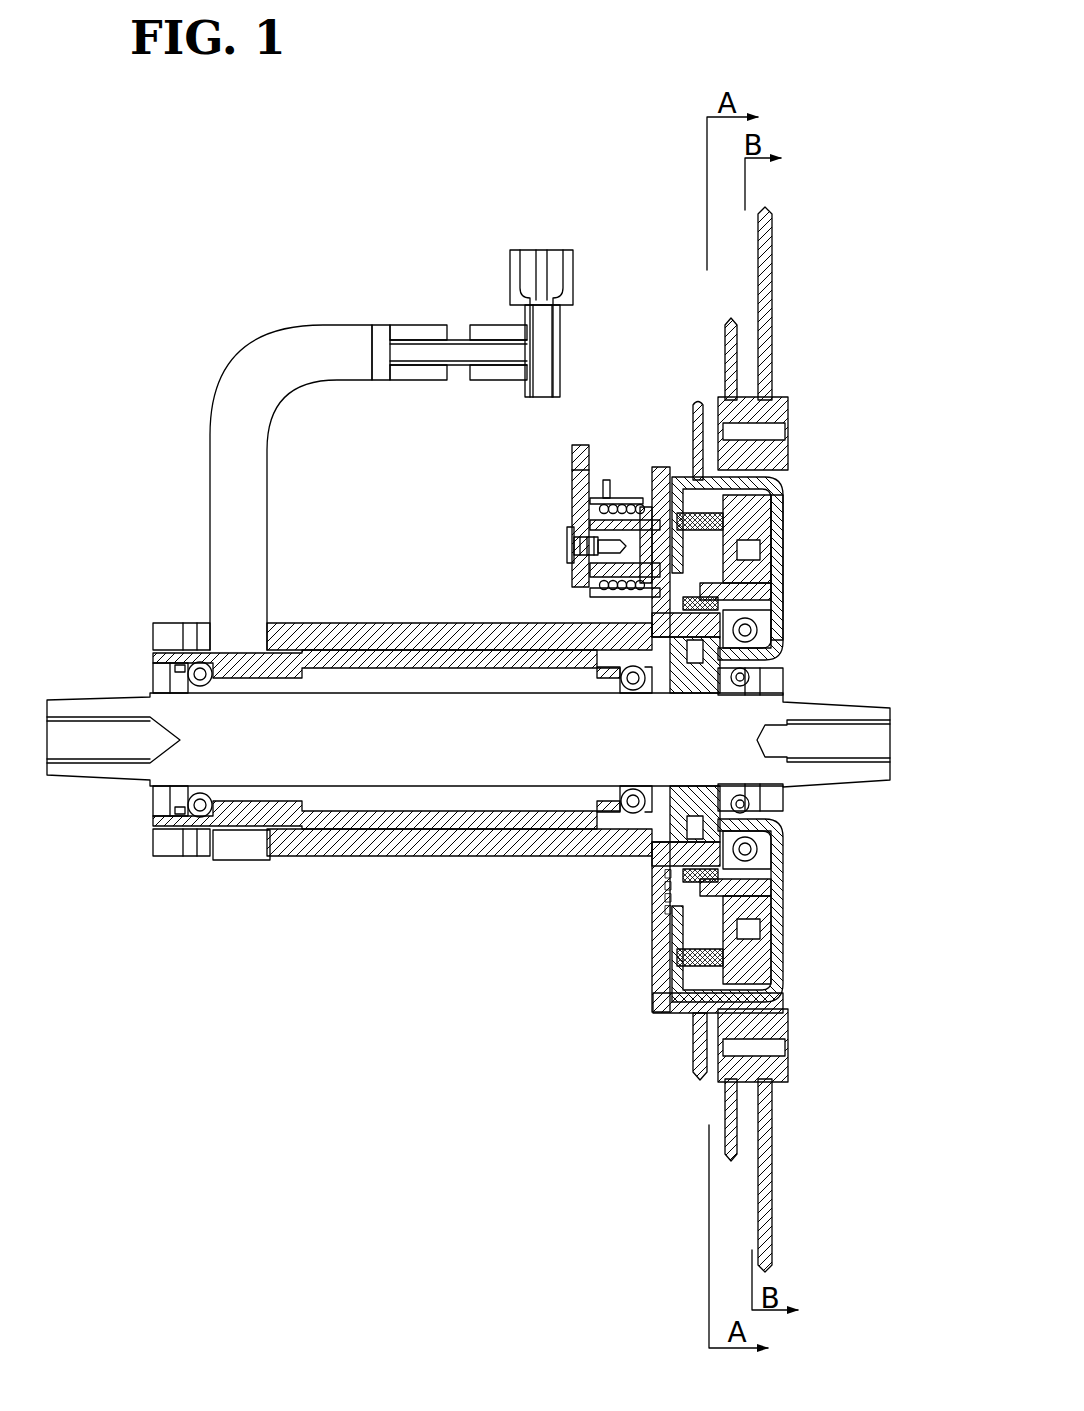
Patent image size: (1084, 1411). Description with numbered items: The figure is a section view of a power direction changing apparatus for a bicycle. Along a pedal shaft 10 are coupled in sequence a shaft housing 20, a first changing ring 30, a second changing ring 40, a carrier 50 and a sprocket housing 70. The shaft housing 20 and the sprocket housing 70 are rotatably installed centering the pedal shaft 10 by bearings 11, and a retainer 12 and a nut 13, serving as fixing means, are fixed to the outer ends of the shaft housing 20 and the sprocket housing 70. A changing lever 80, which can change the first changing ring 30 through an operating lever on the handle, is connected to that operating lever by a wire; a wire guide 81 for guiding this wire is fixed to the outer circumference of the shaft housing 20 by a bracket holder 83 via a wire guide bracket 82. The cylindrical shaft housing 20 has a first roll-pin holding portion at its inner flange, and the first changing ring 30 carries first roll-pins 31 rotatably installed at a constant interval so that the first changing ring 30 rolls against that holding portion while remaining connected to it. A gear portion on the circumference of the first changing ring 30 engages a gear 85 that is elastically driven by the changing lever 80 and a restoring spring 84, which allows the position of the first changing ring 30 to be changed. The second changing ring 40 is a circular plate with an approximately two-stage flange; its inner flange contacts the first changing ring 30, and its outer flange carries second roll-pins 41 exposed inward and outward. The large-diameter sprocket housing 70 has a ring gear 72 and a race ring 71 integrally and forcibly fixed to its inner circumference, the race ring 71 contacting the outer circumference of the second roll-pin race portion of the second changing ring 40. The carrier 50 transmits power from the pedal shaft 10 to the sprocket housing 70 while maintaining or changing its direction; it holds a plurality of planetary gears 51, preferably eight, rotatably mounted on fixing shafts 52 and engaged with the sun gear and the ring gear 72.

The pedal shaft 10 is at (378, 748).
The bearings 11 is at (195, 818).
The retainer 12 is at (175, 822).
The nut 13 is at (178, 637).
The shaft housing 20 is at (660, 626).
The first changing ring 30 is at (665, 905).
The first roll-pins 31 is at (723, 607).
The second changing ring 40 is at (603, 527).
The second roll-pins 41 is at (683, 478).
The carrier 50 is at (773, 580).
The planetary gears 51 is at (777, 530).
The fixing shafts 52 is at (760, 557).
The sprocket housing 70 is at (790, 518).
The race ring 71 is at (714, 420).
The ring gear 72 is at (760, 505).
The changing lever 80 is at (602, 535).
The wire guide 81 is at (508, 286).
The wire guide bracket 82 is at (248, 495).
The bracket holder 83 is at (250, 858).
The restoring spring 84 is at (627, 500).
The gear 85 is at (655, 468).